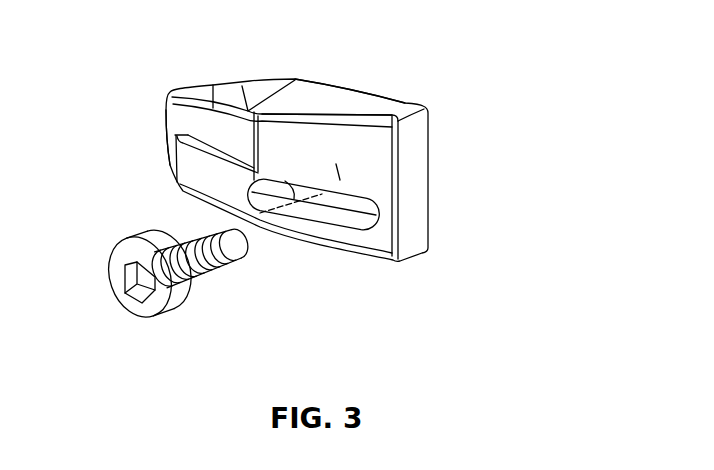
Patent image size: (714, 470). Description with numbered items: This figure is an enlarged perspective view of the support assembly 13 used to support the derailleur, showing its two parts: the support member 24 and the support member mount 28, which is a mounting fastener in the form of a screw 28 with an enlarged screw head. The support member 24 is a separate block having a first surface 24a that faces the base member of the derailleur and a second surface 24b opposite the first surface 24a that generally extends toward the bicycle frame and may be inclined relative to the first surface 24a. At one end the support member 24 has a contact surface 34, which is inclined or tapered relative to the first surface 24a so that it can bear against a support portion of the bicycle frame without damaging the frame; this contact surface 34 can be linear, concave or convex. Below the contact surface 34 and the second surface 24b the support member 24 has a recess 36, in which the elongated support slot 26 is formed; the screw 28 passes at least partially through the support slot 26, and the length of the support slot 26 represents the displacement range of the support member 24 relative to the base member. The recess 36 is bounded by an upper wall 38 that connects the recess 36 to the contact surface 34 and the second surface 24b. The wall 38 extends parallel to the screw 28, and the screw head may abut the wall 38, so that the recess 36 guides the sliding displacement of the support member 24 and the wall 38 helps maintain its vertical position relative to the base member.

The support assembly 13 is at (518, 258).
The support member 24 is at (228, 61).
The first surface 24a is at (433, 190).
The second surface 24b is at (329, 143).
The support slot 26 is at (337, 213).
The support member mount 28 is at (117, 278).
The contact surface 34 is at (178, 116).
The recess 36 is at (196, 180).
The upper wall 38 is at (340, 178).